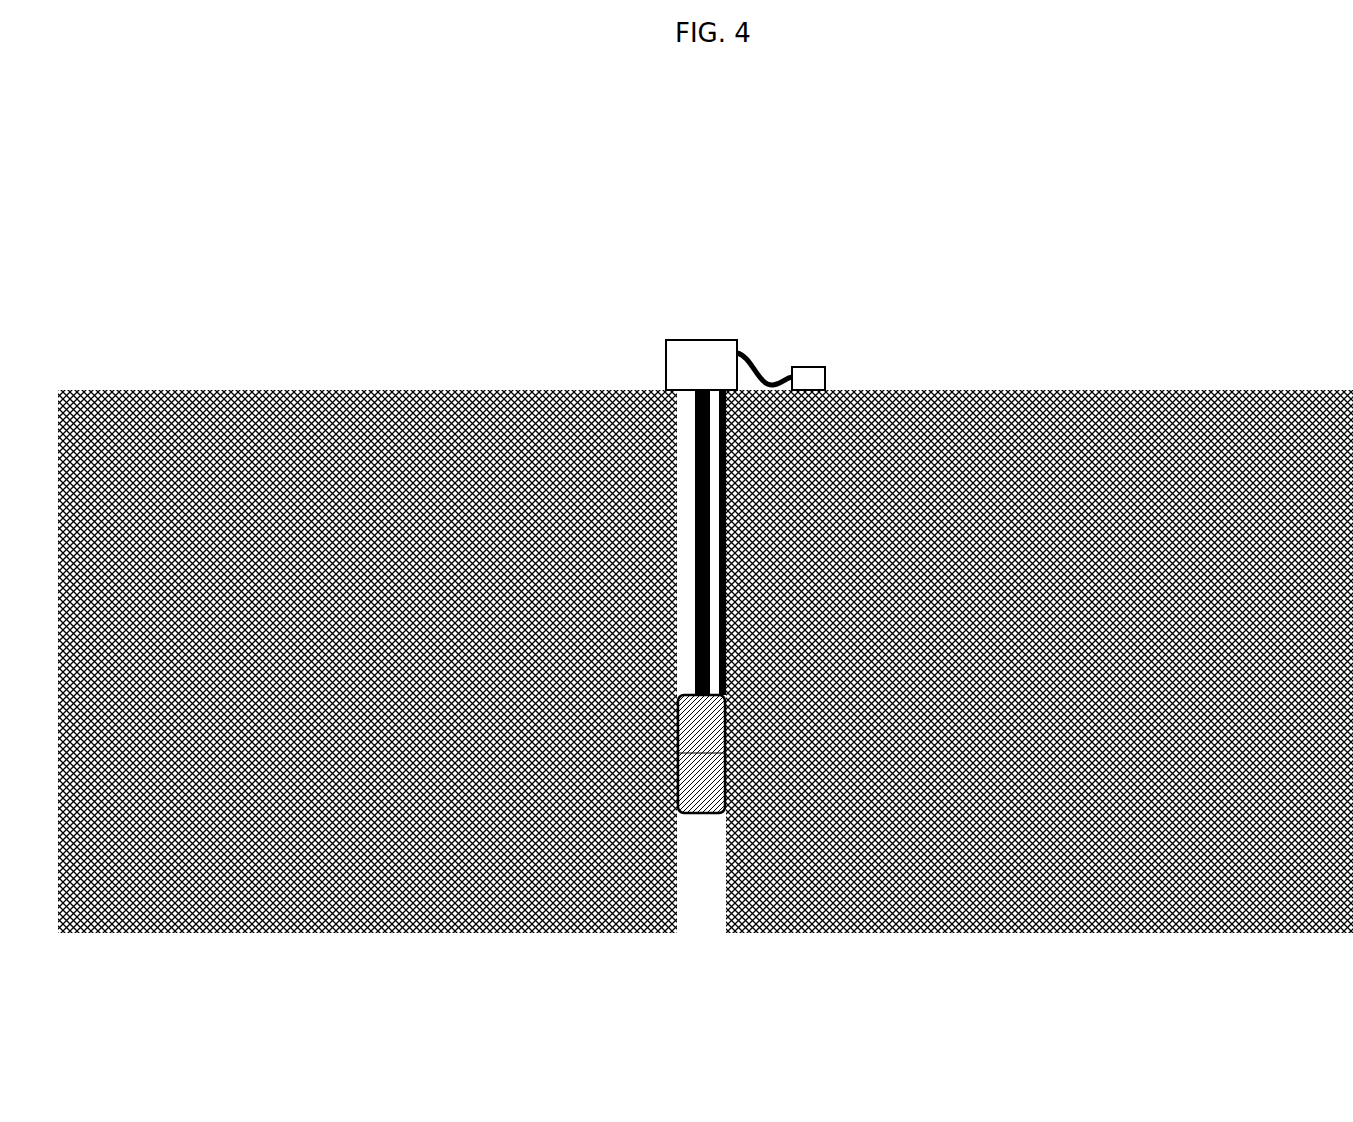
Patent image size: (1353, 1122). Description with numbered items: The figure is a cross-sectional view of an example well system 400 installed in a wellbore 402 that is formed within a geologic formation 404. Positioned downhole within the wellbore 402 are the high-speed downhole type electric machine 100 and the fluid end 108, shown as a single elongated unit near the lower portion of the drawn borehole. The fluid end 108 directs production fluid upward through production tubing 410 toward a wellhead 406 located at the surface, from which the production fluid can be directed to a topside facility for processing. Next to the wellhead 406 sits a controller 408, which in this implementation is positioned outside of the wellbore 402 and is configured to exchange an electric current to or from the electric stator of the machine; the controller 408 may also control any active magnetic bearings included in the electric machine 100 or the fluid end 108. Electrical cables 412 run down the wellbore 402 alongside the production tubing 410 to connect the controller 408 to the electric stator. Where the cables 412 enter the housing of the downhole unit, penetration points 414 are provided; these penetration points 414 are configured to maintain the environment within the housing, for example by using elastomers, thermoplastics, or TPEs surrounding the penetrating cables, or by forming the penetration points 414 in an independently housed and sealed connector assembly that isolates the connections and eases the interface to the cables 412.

The well system 400 is at (652, 238).
The wellbore 402 is at (676, 658).
The geologic formation 404 is at (1000, 632).
The wellhead 406 is at (664, 346).
The controller 408 is at (827, 377).
The production tubing 410 is at (694, 543).
The electrical cables 412 is at (727, 550).
The penetration points 414 is at (728, 695).
The fluid end 108 is at (678, 723).
The high-speed downhole type electric machine 100 is at (639, 748).